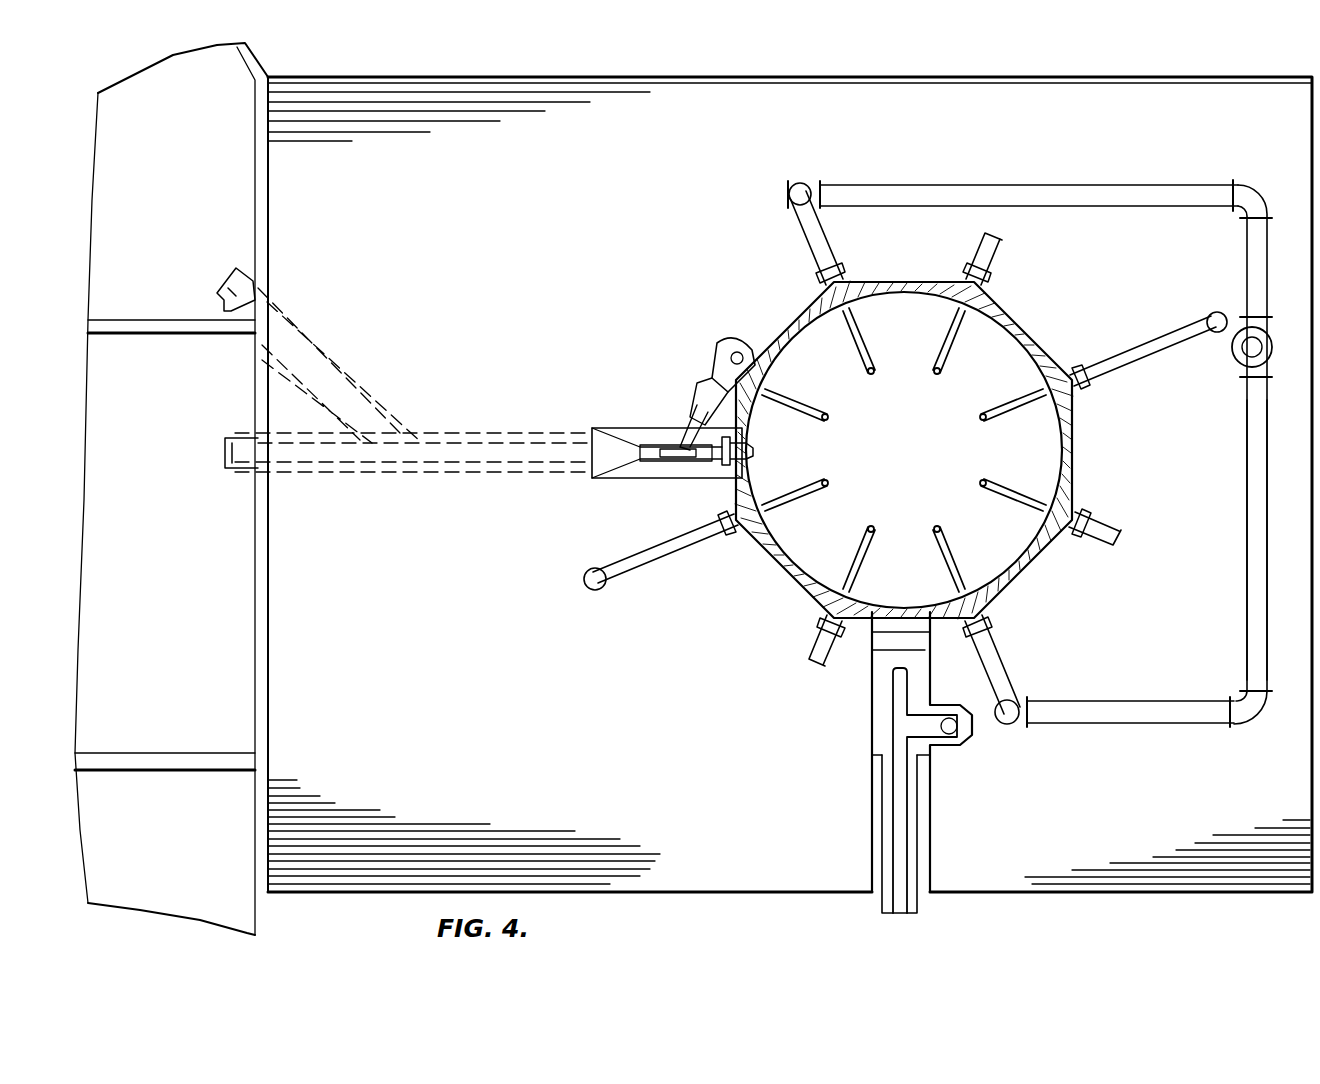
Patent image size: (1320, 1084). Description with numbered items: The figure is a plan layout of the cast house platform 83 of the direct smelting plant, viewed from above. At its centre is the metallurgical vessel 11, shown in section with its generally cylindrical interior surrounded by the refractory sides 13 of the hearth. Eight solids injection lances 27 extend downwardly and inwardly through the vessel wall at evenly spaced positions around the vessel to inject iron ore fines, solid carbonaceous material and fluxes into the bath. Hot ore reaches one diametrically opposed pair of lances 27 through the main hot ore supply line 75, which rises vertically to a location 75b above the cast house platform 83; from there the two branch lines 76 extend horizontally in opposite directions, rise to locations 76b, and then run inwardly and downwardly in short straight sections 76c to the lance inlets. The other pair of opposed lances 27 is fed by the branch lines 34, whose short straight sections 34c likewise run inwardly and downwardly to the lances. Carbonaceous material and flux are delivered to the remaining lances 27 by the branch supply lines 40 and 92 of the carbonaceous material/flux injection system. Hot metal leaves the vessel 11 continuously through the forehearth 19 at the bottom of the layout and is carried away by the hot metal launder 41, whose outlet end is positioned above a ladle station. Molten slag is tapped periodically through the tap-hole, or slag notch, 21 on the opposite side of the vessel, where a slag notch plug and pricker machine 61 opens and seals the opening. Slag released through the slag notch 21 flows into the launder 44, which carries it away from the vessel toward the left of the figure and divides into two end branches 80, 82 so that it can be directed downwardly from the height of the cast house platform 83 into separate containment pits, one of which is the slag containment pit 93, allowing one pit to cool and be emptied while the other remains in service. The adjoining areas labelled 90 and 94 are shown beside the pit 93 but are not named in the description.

The metallurgical vessel 11 is at (928, 467).
The sides 13 is at (1078, 470).
The forehearth 19 is at (887, 668).
The tap-hole 21 is at (758, 452).
The solids injection lances 27 is at (822, 272).
The branch lines 34 is at (1218, 312).
The short straight sections 34c is at (1152, 352).
The branch supply lines 40 is at (1000, 257).
The hot metal launder 41 is at (883, 900).
The launder 44 is at (452, 432).
The slag notch plug and pricker machine 61 is at (718, 348).
The main hot ore supply line 75 is at (1250, 522).
The location 75b is at (1248, 350).
The branch lines 76 is at (1116, 185).
The locations 76b is at (788, 197).
The short straight sections 76c is at (812, 232).
The end branch 80 is at (215, 290).
The end branch 82 is at (225, 450).
The cast house platform 83 is at (500, 187).
The wall section 90 is at (158, 852).
The branch supply lines 92 is at (1100, 540).
The slag containment pit 93 is at (157, 575).
The wall section 94 is at (135, 187).